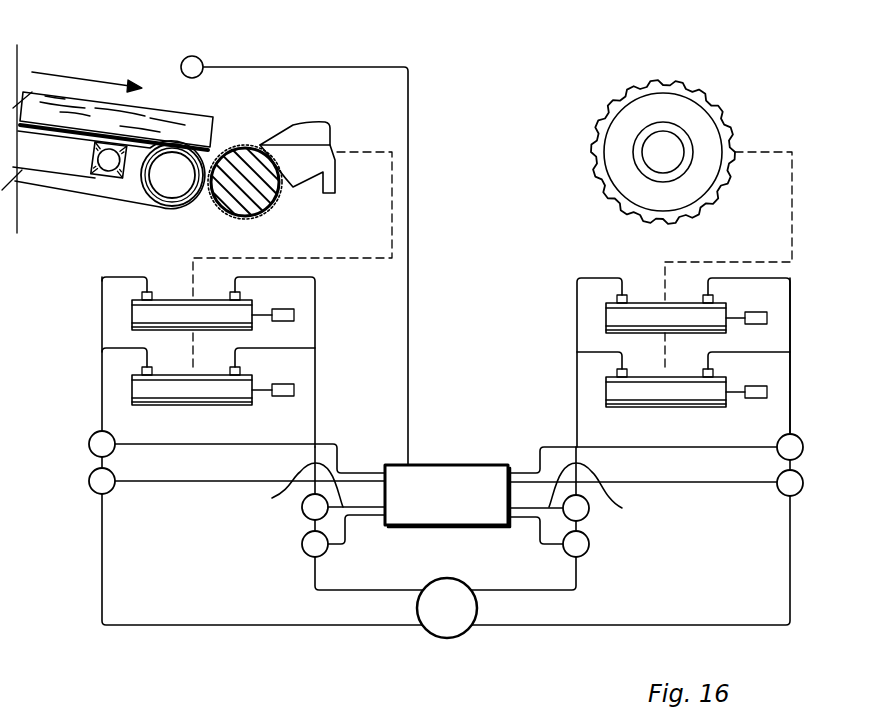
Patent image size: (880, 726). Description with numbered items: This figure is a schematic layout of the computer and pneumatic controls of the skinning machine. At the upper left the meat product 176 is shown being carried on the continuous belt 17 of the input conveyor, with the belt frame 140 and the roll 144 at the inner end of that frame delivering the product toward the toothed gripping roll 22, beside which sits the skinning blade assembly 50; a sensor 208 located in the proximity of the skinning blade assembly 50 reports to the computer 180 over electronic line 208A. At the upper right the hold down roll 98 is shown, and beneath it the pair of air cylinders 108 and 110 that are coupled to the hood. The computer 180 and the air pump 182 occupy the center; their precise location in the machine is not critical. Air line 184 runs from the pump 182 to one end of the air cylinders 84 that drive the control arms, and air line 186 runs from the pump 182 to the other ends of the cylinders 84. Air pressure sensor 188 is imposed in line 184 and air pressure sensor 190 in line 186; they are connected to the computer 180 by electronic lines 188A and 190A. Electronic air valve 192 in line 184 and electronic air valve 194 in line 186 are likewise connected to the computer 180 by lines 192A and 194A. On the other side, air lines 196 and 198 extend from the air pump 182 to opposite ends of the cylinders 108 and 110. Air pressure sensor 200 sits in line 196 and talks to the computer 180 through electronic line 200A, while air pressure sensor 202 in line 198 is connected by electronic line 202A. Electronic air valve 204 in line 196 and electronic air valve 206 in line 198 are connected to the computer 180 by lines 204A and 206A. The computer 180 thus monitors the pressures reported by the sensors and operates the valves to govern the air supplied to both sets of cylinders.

The continuous belt 17 is at (98, 197).
The gripping roll 22 is at (270, 208).
The skinning blade assembly 50 is at (292, 192).
The air cylinders 84 is at (146, 368).
The hold down roll 98 is at (708, 128).
The air cylinder 108 is at (725, 380).
The air cylinder 110 is at (722, 305).
The belt frame 140 is at (122, 200).
The roll 144 is at (172, 207).
The meat product 176 is at (83, 98).
The computer 180 is at (482, 465).
The air pump 182 is at (443, 637).
The air line 184 is at (102, 570).
The air line 186 is at (300, 597).
The air pressure sensor 188 is at (95, 433).
The electronic line 188A is at (148, 444).
The air pressure sensor 190 is at (302, 508).
The electronic line 190A is at (307, 490).
The electronic air valve 192 is at (97, 492).
The electronic line 192A is at (180, 481).
The electronic air valve 194 is at (302, 545).
The electronic line 194A is at (345, 542).
The air line 196 is at (578, 572).
The air line 198 is at (790, 580).
The air pressure sensor 200 is at (590, 511).
The electronic line 200A is at (585, 494).
The air pressure sensor 202 is at (798, 437).
The electronic line 202A is at (683, 447).
The electronic air valve 204 is at (589, 545).
The electronic line 204A is at (548, 542).
The electronic air valve 206 is at (800, 494).
The electronic line 206A is at (683, 484).
The sensor 208 is at (195, 56).
The electronic line 208A is at (347, 67).